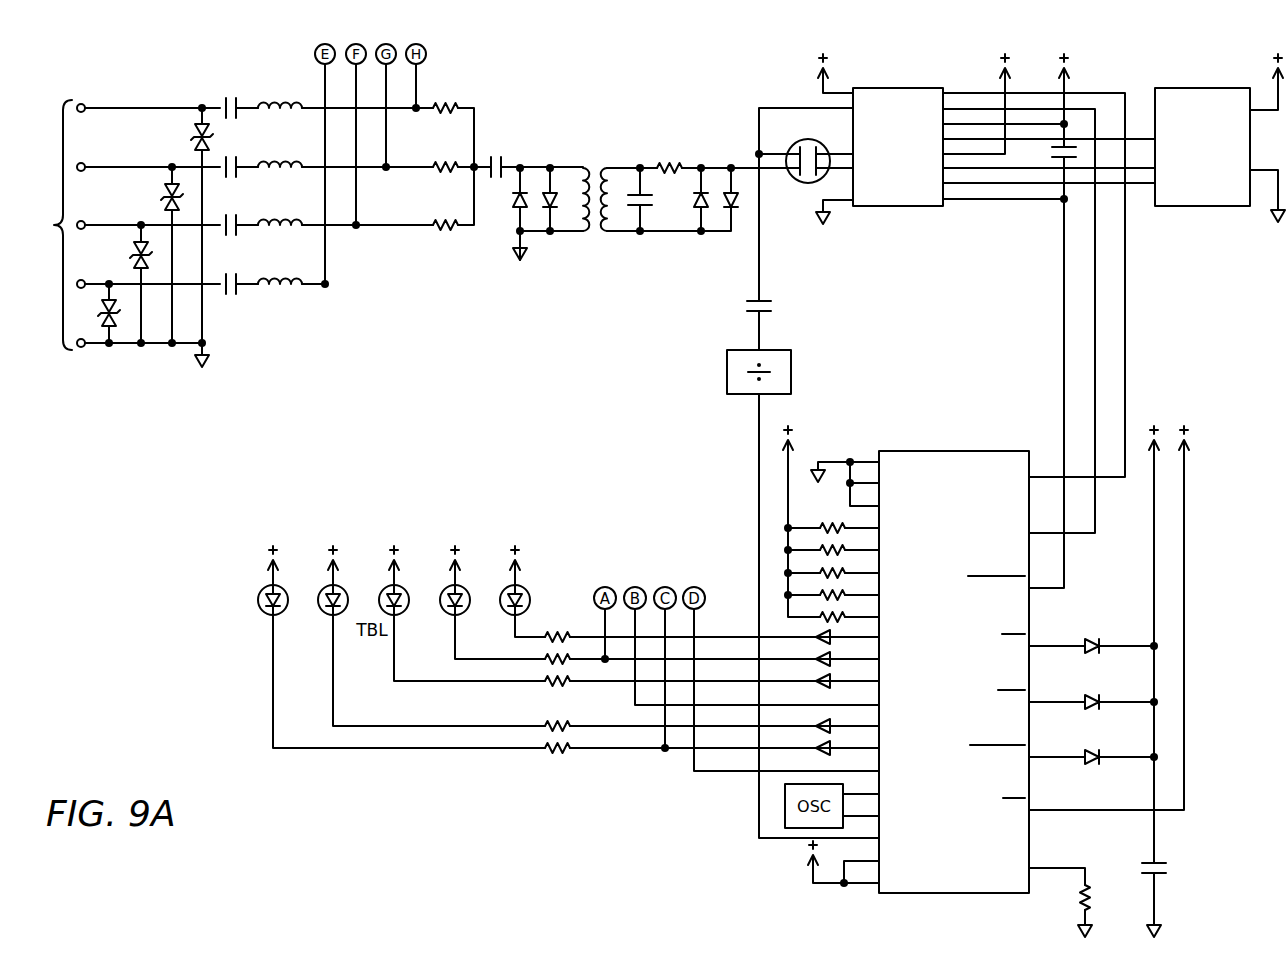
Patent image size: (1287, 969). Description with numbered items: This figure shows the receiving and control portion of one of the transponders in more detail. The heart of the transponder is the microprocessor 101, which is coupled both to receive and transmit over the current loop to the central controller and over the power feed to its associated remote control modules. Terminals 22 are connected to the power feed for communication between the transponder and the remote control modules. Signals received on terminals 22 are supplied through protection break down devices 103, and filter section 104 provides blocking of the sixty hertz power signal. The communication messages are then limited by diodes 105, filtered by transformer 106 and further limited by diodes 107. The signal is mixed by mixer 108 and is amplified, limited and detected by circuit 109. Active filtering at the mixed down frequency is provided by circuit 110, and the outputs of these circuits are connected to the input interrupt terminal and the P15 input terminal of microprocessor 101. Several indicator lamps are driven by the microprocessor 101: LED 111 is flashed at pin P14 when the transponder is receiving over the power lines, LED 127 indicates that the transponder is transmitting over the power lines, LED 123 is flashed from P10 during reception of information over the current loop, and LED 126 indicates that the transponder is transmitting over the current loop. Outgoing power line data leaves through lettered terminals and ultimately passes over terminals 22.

The terminals 22 is at (52, 225).
The microprocessor 101 is at (980, 451).
The protection break down devices 103 is at (148, 377).
The filter section 104 is at (294, 323).
The diodes 105 is at (541, 150).
The transformer 106 is at (603, 250).
The diodes 107 is at (719, 150).
The mixer 108 is at (808, 139).
The circuit 109 is at (918, 160).
The circuit 110 is at (1220, 160).
The LED 111 is at (341, 590).
The LED 123 is at (522, 590).
The LED 126 is at (462, 590).
The LED 127 is at (281, 590).